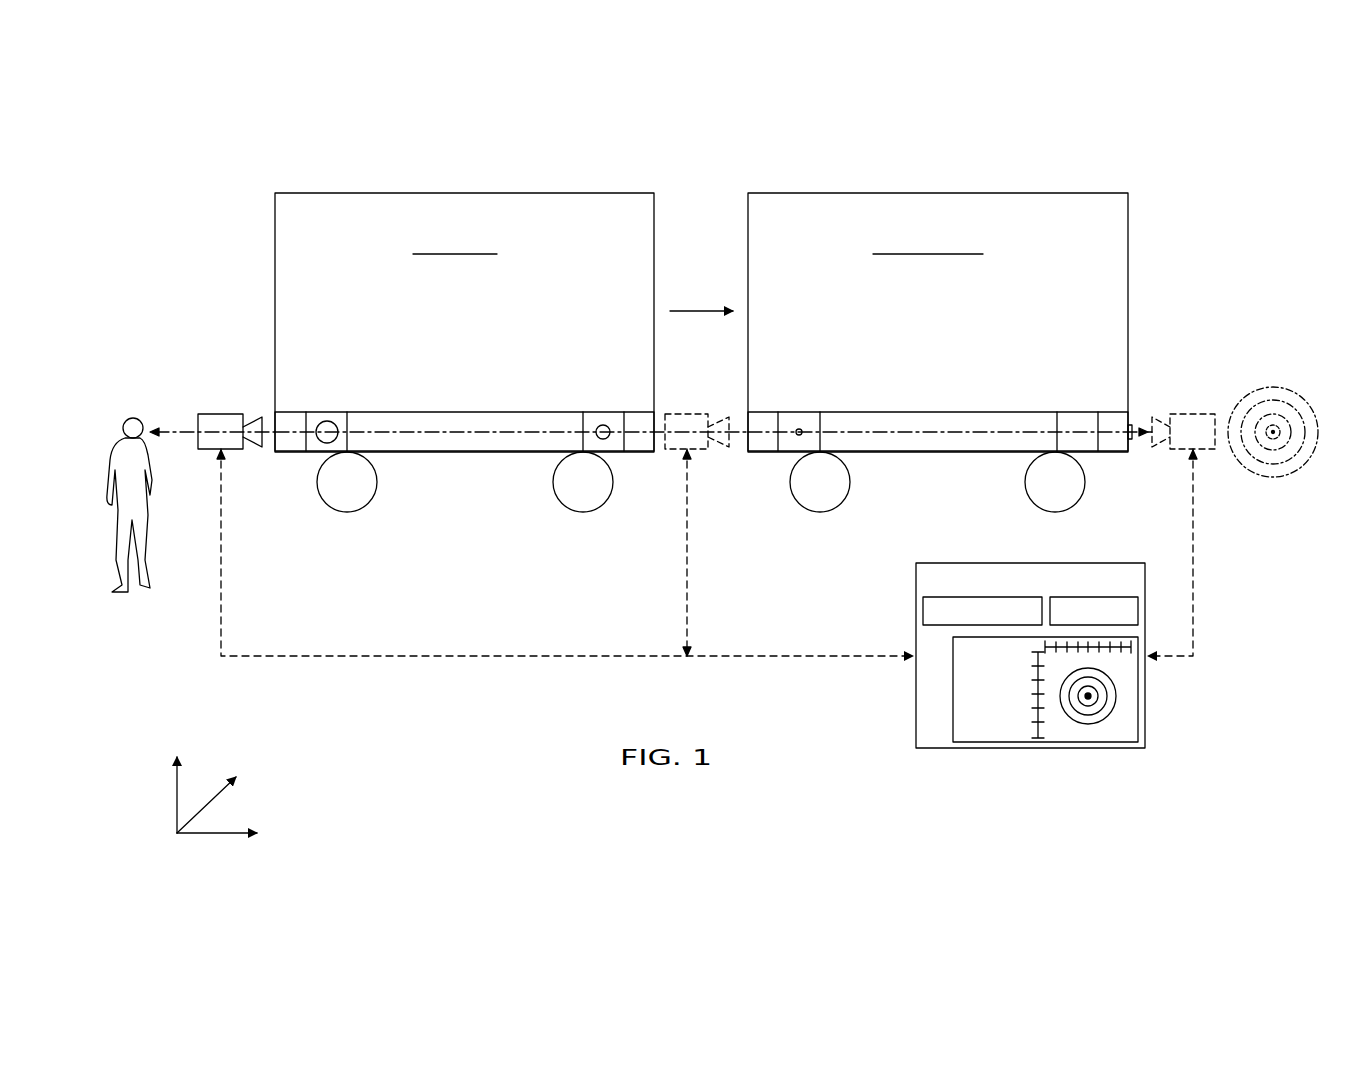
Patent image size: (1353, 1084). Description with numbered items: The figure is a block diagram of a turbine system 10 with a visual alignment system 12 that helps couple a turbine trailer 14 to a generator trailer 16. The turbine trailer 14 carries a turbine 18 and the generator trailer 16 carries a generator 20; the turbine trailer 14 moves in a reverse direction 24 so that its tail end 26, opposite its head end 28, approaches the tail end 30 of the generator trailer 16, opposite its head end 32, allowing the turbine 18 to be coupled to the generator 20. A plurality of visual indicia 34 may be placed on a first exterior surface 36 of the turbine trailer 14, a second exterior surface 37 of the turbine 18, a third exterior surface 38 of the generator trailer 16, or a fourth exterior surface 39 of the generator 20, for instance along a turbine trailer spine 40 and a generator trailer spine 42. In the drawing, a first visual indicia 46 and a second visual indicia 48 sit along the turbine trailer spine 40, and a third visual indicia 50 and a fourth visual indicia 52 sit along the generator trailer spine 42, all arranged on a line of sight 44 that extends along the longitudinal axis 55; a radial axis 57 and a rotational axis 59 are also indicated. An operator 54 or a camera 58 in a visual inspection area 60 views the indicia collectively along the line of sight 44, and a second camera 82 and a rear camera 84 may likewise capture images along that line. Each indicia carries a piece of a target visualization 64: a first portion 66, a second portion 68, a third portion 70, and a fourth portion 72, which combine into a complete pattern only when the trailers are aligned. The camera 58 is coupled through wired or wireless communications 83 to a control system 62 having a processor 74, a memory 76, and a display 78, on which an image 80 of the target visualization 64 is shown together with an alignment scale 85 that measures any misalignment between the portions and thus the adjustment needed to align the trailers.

The turbine system 10 is at (418, 722).
The visual alignment system 12 is at (586, 565).
The turbine trailer 14 is at (640, 452).
The generator trailer 16 is at (1114, 452).
The turbine 18 is at (573, 193).
The generator 20 is at (1058, 193).
The reverse direction 24 is at (694, 311).
The tail end of the turbine trailer 26 is at (665, 228).
The head end of the turbine trailer 28 is at (272, 278).
The tail end of the generator trailer 30 is at (735, 228).
The head end of the generator trailer 32 is at (1145, 228).
The visual indicia 34 is at (316, 410).
The first exterior surface 36 is at (640, 424).
The second exterior surface 37 is at (418, 210).
The third exterior surface 38 is at (1112, 430).
The fourth exterior surface 39 is at (920, 210).
The turbine trailer spine 40 is at (498, 470).
The generator trailer spine 42 is at (963, 470).
The line of sight 44 is at (1132, 446).
The first visual indicia 46 is at (312, 452).
The second visual indicia 48 is at (598, 452).
The third visual indicia 50 is at (782, 452).
The fourth visual indicia 52 is at (1075, 452).
The operator 54 is at (146, 592).
The longitudinal axis 55 is at (214, 834).
The radial axis 57 is at (177, 800).
The camera 58 is at (221, 413).
The rotational axis 59 is at (205, 808).
The visual inspection area 60 is at (153, 405).
The control system 62 is at (1023, 643).
The target visualization 64 is at (1230, 350).
The first portion of the target visualization 66 is at (337, 424).
The second portion of the target visualization 68 is at (598, 426).
The third portion of the target visualization 70 is at (801, 430).
The fourth portion of the target visualization 72 is at (1078, 432).
The processor 74 is at (923, 612).
The memory 76 is at (1092, 597).
The display 78 is at (953, 691).
The image 80 is at (1105, 727).
The second camera 82 is at (693, 413).
The wired and/or wireless communications 83 is at (560, 660).
The rear camera 84 is at (1198, 413).
The alignment scale 85 is at (1108, 650).